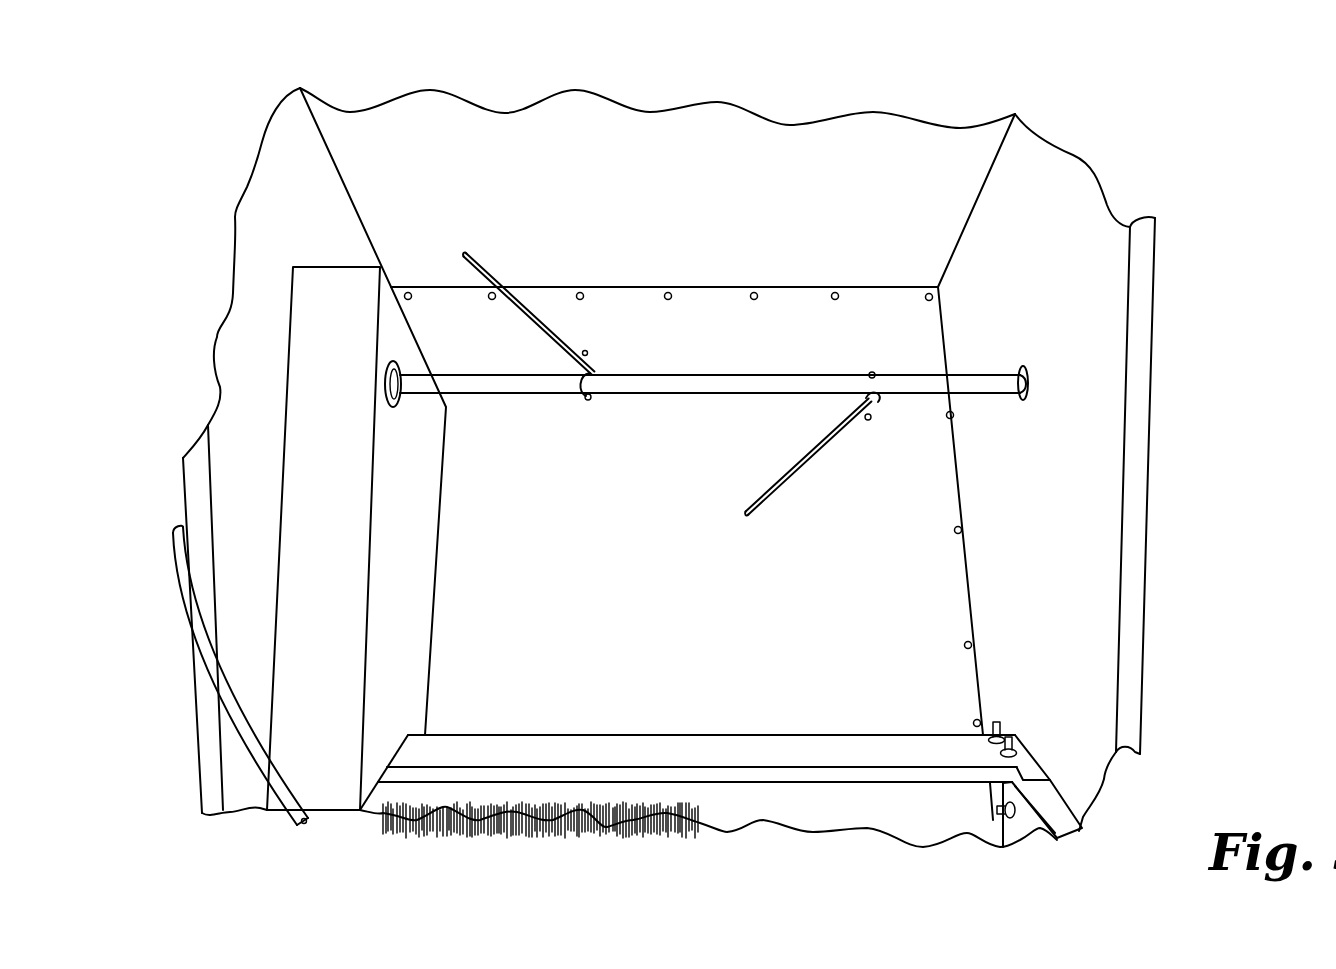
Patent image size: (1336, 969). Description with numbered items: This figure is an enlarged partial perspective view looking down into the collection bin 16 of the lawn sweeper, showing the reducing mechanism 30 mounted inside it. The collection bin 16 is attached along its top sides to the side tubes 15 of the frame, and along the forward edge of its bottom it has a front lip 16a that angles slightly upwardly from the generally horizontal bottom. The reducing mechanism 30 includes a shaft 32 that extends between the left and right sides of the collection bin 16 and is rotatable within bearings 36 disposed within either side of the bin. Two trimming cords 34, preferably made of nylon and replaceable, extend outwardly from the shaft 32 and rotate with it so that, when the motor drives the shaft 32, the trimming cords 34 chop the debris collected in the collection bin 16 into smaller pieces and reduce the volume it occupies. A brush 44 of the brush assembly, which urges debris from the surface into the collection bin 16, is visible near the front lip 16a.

The side tube 15 is at (197, 478).
The collection bin 16 is at (722, 145).
The front lip 16a is at (840, 783).
The reducing mechanism 30 is at (963, 375).
The shaft 32 is at (827, 387).
The trimming cord 34 is at (527, 308).
The bearing 36 is at (1019, 366).
The brush 44 is at (552, 840).